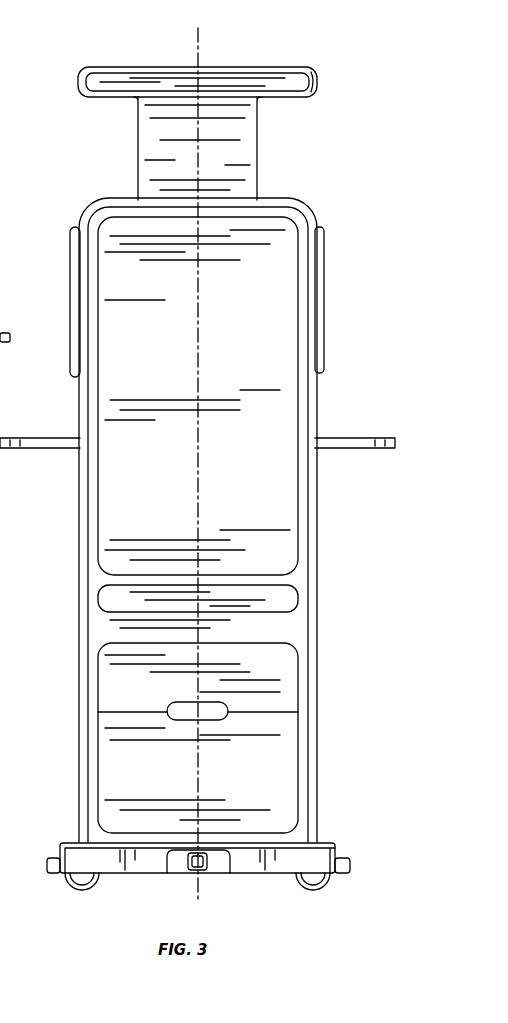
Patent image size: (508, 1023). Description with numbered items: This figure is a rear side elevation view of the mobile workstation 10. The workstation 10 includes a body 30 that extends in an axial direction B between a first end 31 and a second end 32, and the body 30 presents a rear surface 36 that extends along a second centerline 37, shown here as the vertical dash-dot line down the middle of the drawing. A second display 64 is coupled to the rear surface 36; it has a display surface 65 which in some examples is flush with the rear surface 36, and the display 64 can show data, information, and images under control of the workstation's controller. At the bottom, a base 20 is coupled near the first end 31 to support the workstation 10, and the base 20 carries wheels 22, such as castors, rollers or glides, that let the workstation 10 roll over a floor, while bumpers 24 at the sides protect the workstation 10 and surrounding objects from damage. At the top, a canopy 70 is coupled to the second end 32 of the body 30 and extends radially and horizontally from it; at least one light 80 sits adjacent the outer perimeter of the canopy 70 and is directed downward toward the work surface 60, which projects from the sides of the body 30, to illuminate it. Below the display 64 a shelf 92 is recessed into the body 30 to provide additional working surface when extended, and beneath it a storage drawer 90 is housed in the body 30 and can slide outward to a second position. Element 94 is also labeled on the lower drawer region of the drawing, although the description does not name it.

The mobile workstation 10 is at (348, 232).
The base 20 is at (148, 862).
The wheels 22 is at (82, 891).
The bumpers 24 is at (345, 858).
The body 30 is at (56, 490).
The first end 31 is at (56, 813).
The second end 32 is at (66, 210).
The rear surface 36 is at (300, 578).
The second centerline 37 is at (204, 46).
The work surface 60 is at (340, 438).
The second display 64 is at (235, 310).
The display surface 65 is at (237, 461).
The canopy 70 is at (245, 82).
The light 80 is at (312, 72).
The storage drawer 90 is at (278, 770).
The shelf 92 is at (118, 600).
The lower door upper panel 94 is at (272, 658).
The axial direction B is at (343, 556).